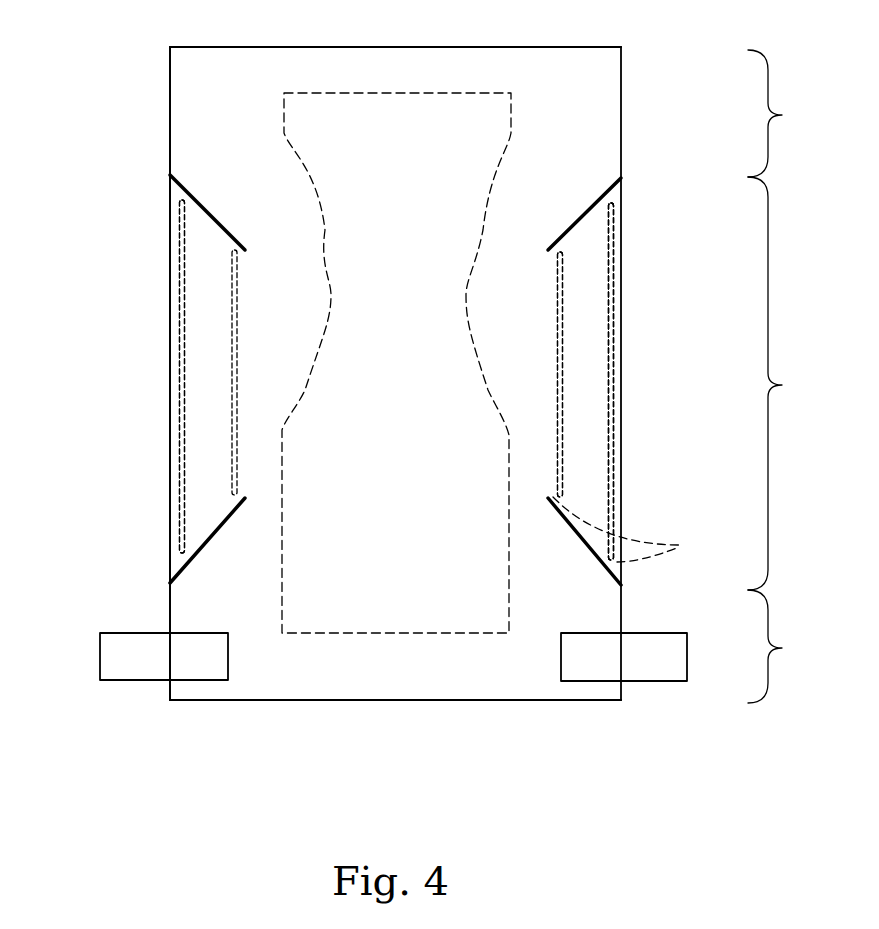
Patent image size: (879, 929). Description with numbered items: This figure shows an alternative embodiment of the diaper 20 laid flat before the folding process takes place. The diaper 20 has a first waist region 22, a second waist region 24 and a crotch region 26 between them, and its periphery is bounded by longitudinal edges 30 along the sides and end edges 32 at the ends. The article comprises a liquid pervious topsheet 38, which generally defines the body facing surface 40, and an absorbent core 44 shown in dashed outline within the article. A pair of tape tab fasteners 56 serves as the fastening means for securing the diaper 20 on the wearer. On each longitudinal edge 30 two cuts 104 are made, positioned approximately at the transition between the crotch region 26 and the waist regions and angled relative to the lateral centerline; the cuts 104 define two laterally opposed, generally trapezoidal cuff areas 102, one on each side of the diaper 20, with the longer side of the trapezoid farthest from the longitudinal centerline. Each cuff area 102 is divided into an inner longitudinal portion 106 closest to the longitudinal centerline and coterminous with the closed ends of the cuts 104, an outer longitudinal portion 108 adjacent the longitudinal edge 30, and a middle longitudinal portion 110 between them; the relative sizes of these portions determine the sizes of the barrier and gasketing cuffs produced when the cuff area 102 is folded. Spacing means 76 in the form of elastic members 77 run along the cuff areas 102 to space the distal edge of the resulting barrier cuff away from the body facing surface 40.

The diaper 20 is at (143, 432).
The first waist region 22 is at (783, 113).
The second waist region 24 is at (782, 646).
The crotch region 26 is at (778, 383).
The longitudinal edge 30 is at (171, 78).
The end edge 32 is at (538, 48).
The topsheet 38 is at (421, 63).
The body facing surface 40 is at (408, 682).
The absorbent core 44 is at (336, 115).
The tape tab fastener 56 is at (660, 663).
The spacing means 76 is at (180, 372).
The elastic member 77 is at (635, 530).
The cuff area 102 is at (582, 313).
The cut 104 is at (218, 227).
The inner longitudinal portion 106 is at (547, 473).
The outer longitudinal portion 108 is at (618, 195).
The middle longitudinal portion 110 is at (600, 358).